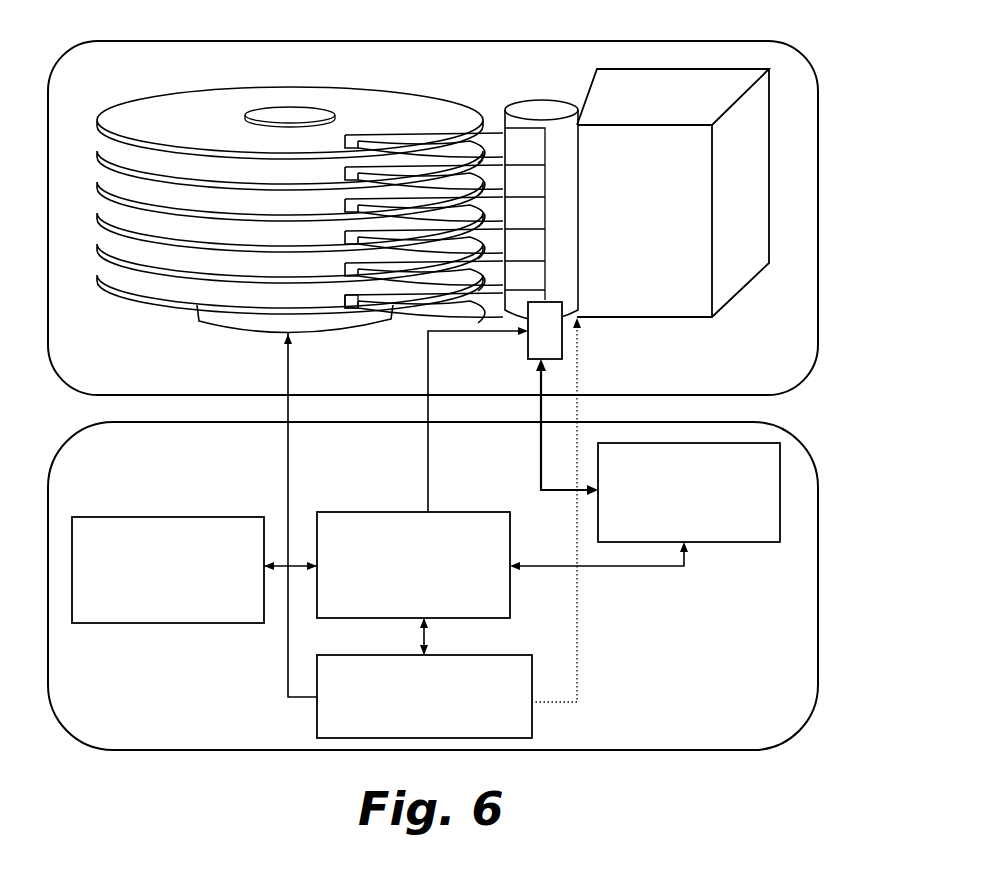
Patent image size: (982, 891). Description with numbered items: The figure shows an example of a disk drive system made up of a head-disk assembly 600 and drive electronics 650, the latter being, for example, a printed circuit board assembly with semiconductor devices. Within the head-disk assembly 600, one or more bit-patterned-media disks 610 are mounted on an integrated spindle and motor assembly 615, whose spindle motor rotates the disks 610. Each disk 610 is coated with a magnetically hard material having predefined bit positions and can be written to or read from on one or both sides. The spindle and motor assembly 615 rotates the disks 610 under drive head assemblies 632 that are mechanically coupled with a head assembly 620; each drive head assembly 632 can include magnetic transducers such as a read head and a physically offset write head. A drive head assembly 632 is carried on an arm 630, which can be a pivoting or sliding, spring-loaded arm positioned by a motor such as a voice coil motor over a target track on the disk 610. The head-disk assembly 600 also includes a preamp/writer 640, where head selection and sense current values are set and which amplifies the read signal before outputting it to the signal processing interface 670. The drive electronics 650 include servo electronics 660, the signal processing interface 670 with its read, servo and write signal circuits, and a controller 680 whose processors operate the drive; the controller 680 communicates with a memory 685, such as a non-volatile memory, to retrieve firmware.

The head-disk assembly 600 is at (806, 62).
The disk 610 is at (198, 82).
The integrated spindle and motor assembly 615 is at (248, 336).
The head assembly 620 is at (574, 90).
The arm 630 is at (420, 132).
The drive head assembly 632 is at (352, 312).
The preamp/writer 640 is at (527, 352).
The drive electronics 650 is at (800, 442).
The servo electronics 660 is at (436, 655).
The signal processing interface 670 is at (699, 542).
The controller 680 is at (338, 512).
The memory 685 is at (110, 517).